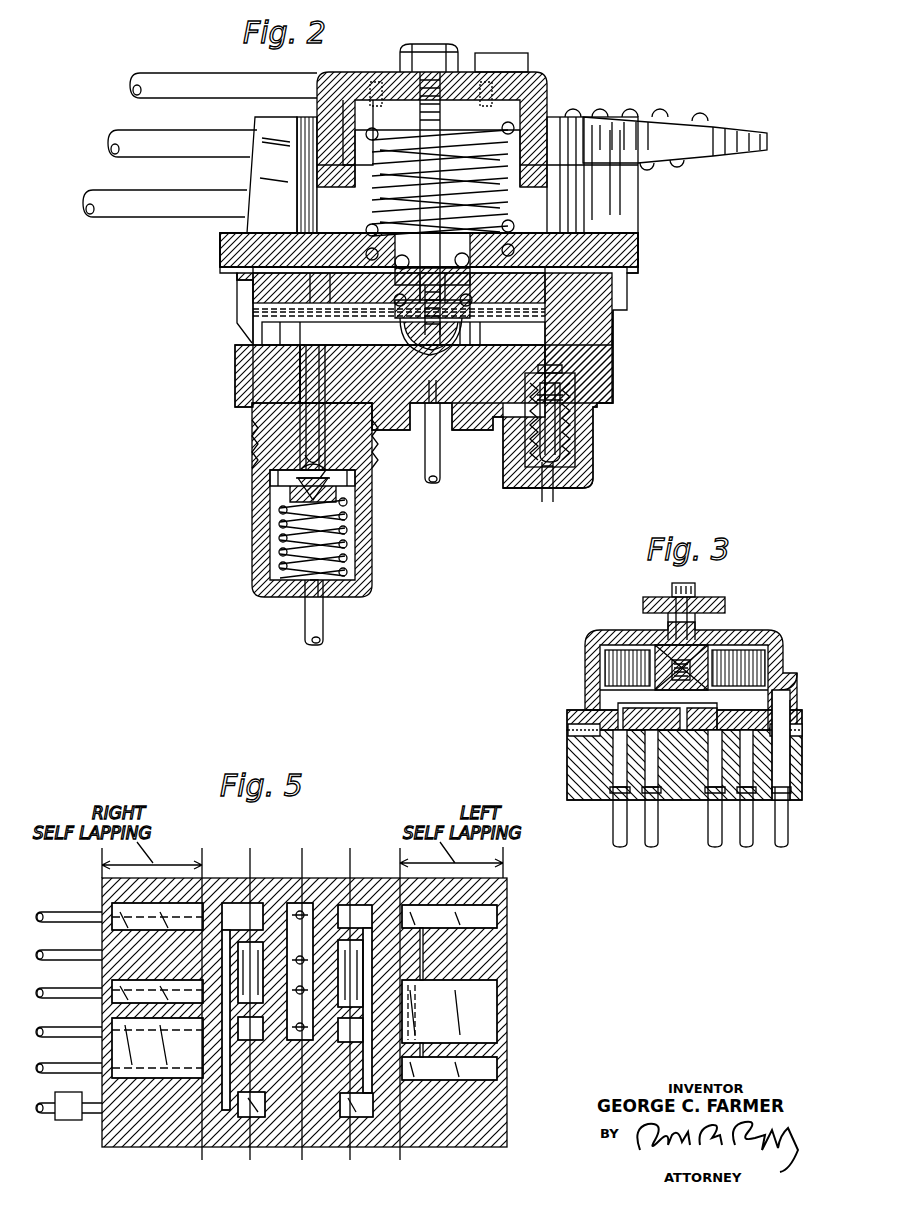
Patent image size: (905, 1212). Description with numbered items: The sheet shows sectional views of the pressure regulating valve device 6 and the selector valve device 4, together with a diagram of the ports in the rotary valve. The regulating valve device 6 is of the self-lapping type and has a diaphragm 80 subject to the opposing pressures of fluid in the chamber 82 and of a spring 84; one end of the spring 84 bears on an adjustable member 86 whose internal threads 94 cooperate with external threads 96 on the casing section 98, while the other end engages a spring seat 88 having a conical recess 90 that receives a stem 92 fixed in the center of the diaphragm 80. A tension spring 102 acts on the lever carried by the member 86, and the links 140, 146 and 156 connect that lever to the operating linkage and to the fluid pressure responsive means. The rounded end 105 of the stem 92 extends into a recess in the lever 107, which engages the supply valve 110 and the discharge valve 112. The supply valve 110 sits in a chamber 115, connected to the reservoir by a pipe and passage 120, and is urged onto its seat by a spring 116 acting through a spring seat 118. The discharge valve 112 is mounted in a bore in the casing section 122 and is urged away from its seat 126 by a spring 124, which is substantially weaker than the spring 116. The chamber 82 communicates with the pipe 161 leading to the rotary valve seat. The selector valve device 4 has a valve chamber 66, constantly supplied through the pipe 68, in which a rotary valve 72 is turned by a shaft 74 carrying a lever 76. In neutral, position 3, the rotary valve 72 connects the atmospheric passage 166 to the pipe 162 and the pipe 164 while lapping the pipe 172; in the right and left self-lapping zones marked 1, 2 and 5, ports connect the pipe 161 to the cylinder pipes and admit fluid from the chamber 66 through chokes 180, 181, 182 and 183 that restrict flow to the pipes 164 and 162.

In FIG. 2, the pressure regulating valve device 6 is at (652, 255).
In FIG. 2, the casing section 98 is at (228, 247).
In FIG. 2, the link 146 is at (192, 83).
In FIG. 2, the link 156 is at (196, 120).
In FIG. 2, the link 140 is at (196, 180).
In FIG. 2, the external threads 96 is at (313, 162).
In FIG. 2, the internal threads 94 is at (545, 176).
In FIG. 2, the adjustable member 86 is at (543, 146).
In FIG. 2, the spring 84 is at (540, 205).
In FIG. 2, the tension spring 102 is at (650, 97).
In FIG. 2, the spring seat 88 is at (612, 286).
In FIG. 2, the diaphragm 80 is at (605, 313).
In FIG. 2, the lever 107 is at (605, 333).
In FIG. 2, the chamber 82 is at (598, 355).
In FIG. 2, the conical recess 90 is at (400, 283).
In FIG. 2, the stem 92 is at (427, 348).
In FIG. 2, the rounded end 105 is at (440, 353).
In FIG. 2, the supply valve 110 is at (305, 442).
In FIG. 2, the chamber 115 is at (292, 478).
In FIG. 2, the spring 116 is at (282, 530).
In FIG. 2, the spring seat 118 is at (355, 490).
In FIG. 2, the pipe and passage 120 is at (320, 636).
In FIG. 2, the pipe 161 is at (433, 463).
In FIG. 3, the pipe 161 is at (748, 850).
In FIG. 5, the pipe 161 is at (78, 1045).
In FIG. 2, the spring 124 is at (525, 432).
In FIG. 2, the discharge valve 112 is at (566, 434).
In FIG. 2, the seat 126 is at (560, 468).
In FIG. 2, the casing section 122 is at (530, 489).
In FIG. 3, the lever 76 is at (723, 600).
In FIG. 3, the shaft 74 is at (698, 630).
In FIG. 3, the valve chamber 66 is at (590, 645).
In FIG. 5, the valve chamber 66 is at (50, 1112).
In FIG. 3, the selector valve device 4 is at (575, 674).
In FIG. 5, the selector valve device 4 is at (350, 860).
In FIG. 3, the rotary valve 72 is at (590, 700).
In FIG. 3, the atmospheric passage 166 is at (700, 800).
In FIG. 5, the atmospheric passage 166 is at (82, 969).
In FIG. 3, the pipe 162 is at (620, 850).
In FIG. 5, the pipe 162 is at (82, 884).
In FIG. 3, the pipe 172 is at (652, 850).
In FIG. 5, the pipe 172 is at (82, 931).
In FIG. 3, the pipe 164 is at (715, 850).
In FIG. 5, the pipe 164 is at (82, 1008).
In FIG. 3, the pipe 68 is at (782, 850).
In FIG. 5, the valve position 1 is at (202, 858).
In FIG. 5, the valve position 2 is at (250, 858).
In FIG. 5, the neutral position 3 is at (302, 860).
In FIG. 5, the valve position 5 is at (400, 858).
In FIG. 5, the choke 180 is at (212, 1145).
In FIG. 5, the choke 181 is at (250, 1150).
In FIG. 5, the choke 183 is at (343, 1118).
In FIG. 5, the choke 182 is at (372, 1118).